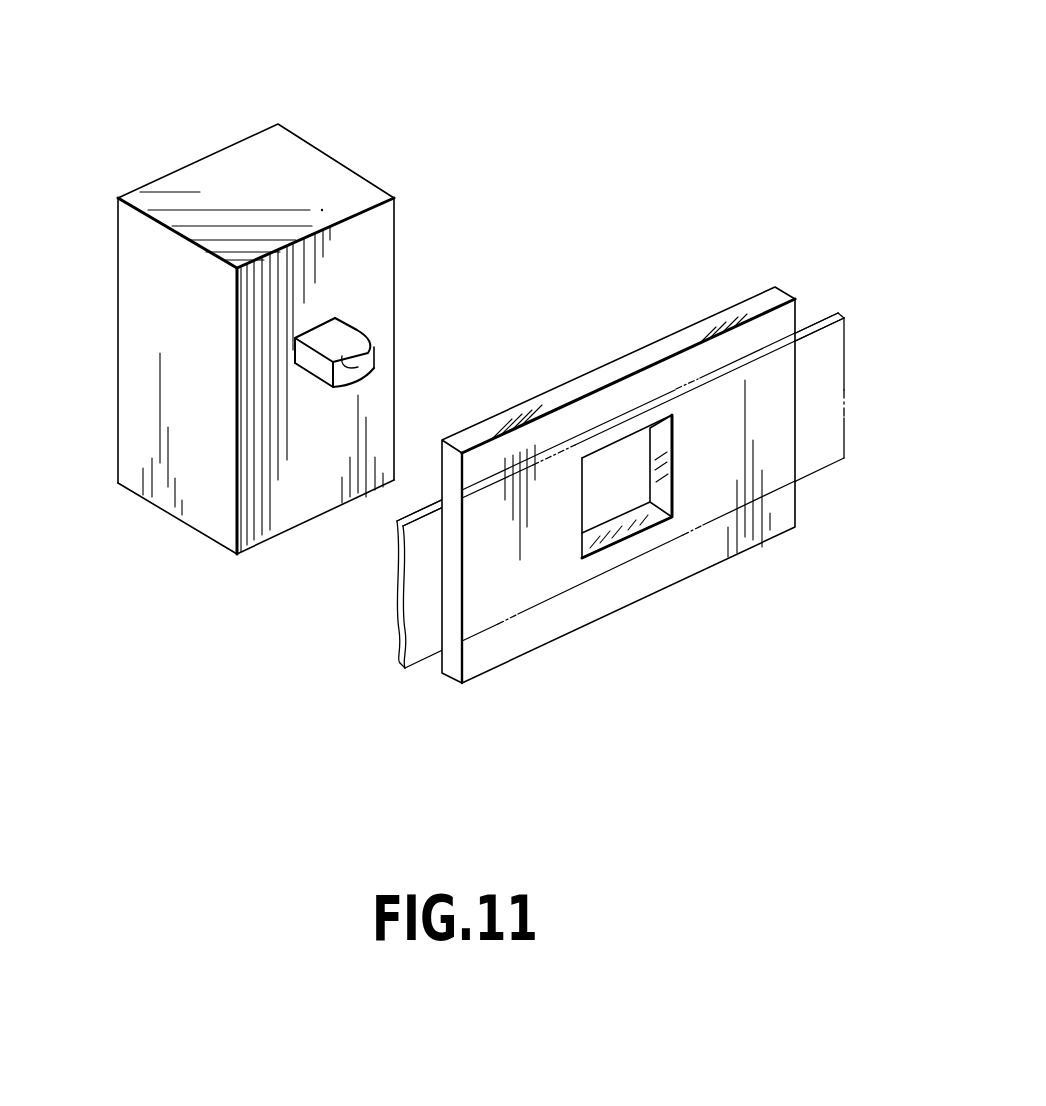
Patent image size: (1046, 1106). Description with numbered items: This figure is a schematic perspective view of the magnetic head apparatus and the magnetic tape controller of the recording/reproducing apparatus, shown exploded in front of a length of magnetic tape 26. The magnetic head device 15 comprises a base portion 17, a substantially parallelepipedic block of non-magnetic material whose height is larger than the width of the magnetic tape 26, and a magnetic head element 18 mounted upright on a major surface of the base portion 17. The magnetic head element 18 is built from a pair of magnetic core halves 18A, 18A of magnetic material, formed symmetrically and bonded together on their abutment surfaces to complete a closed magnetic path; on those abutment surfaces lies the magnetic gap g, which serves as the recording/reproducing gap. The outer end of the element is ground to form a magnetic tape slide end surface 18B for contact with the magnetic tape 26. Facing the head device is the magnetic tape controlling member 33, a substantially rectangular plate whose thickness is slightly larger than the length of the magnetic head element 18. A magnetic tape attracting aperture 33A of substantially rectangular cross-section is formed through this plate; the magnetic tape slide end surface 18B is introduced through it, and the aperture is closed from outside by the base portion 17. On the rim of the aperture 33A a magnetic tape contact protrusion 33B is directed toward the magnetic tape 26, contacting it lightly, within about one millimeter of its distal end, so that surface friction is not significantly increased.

The magnetic head device 15 is at (104, 187).
The base portion 17 is at (274, 152).
The magnetic head element 18 is at (485, 278).
The magnetic core half 18A is at (358, 342).
The magnetic tape slide end surface 18B is at (370, 357).
The magnetic gap g is at (342, 356).
The magnetic tape 26 is at (828, 382).
The magnetic tape controlling member 33 is at (752, 307).
The magnetic tape attracting aperture 33A is at (631, 523).
The magnetic tape contact protrusion 33B is at (648, 452).